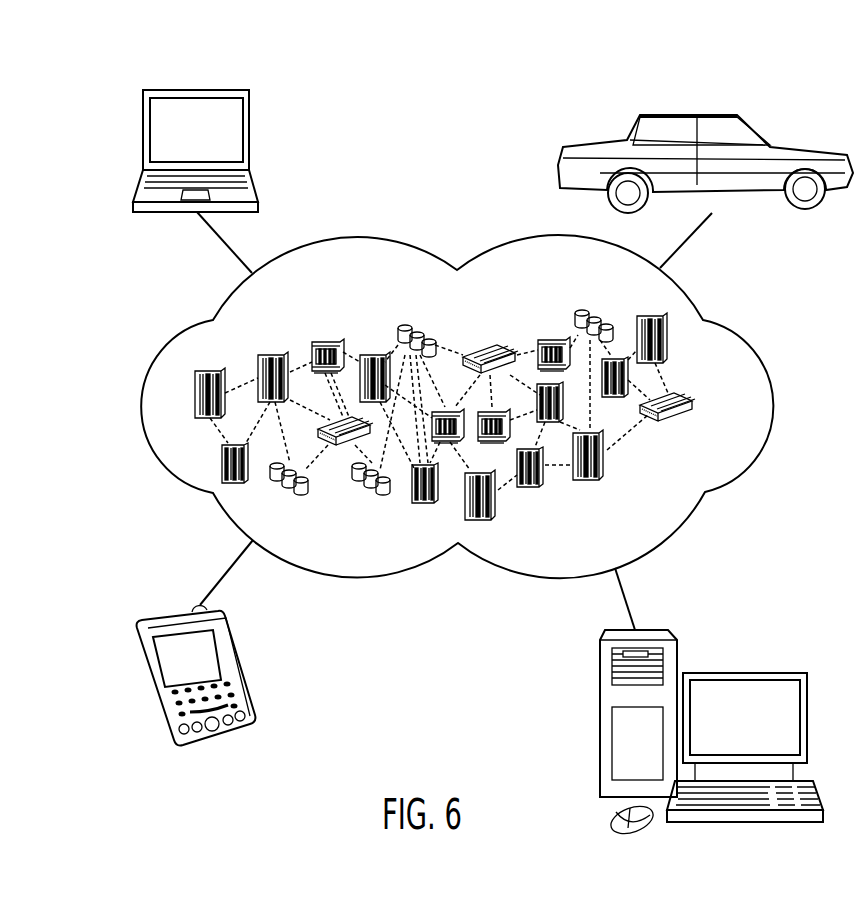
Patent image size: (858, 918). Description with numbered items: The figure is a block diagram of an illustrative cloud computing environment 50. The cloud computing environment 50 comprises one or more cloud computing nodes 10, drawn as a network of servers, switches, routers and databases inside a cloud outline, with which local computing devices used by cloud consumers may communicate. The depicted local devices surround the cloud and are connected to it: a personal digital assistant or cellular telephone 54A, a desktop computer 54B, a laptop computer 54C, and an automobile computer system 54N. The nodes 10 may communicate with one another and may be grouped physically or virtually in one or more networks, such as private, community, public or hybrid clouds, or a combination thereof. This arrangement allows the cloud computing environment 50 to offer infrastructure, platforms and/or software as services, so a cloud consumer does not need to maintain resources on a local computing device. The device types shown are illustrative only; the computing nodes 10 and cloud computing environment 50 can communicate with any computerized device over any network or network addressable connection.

The cloud computing nodes 10 is at (708, 407).
The cloud computing environment 50 is at (757, 325).
The personal digital assistant (PDA) or cellular telephone 54A is at (178, 612).
The desktop computer 54B is at (745, 672).
The laptop computer 54C is at (196, 90).
The automobile computer system 54N is at (690, 112).